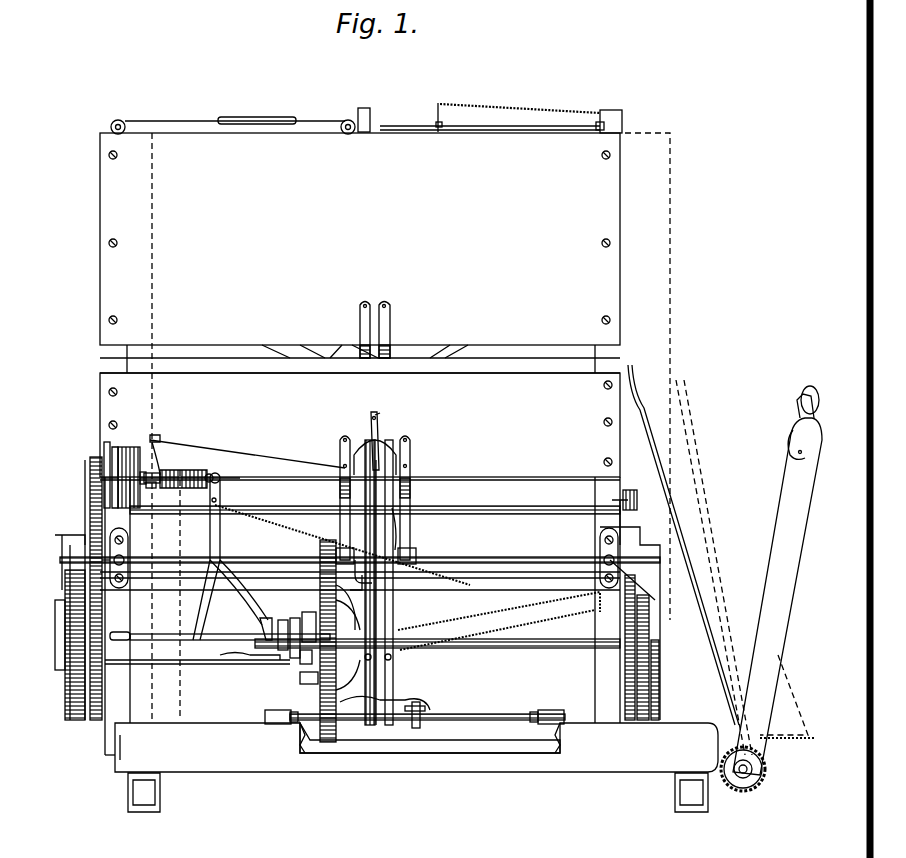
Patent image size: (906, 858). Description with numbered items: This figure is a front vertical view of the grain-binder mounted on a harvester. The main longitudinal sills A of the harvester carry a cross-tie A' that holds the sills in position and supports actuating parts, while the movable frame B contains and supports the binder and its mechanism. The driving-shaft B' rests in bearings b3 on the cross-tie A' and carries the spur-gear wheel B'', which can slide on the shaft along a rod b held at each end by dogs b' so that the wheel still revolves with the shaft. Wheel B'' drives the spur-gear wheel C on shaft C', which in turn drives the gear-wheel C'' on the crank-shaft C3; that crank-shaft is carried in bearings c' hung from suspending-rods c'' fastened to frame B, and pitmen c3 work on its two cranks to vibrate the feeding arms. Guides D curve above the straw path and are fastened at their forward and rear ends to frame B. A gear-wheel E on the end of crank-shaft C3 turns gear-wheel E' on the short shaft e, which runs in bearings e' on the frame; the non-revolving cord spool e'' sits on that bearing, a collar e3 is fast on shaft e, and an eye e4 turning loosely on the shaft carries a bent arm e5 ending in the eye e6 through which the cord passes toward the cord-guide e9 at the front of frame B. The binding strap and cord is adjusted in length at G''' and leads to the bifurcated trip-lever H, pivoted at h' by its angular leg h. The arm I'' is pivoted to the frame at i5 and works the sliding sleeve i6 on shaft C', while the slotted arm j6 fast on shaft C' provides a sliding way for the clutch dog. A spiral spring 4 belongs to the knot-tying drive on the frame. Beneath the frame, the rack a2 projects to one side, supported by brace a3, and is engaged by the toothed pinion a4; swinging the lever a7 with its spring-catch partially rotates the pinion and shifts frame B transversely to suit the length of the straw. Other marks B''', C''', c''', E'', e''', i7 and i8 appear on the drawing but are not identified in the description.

The main longitudinal sills A is at (418, 792).
The cross-tie A' is at (416, 747).
The movable frame B is at (360, 444).
The driving-shaft B' is at (427, 707).
The spur-gear wheel B'' is at (430, 738).
The right gear stack B''' is at (630, 605).
The spur-gear wheel C is at (340, 641).
The shaft C' is at (437, 652).
The gear-wheel C'' is at (377, 580).
The upper shaft C''' is at (375, 528).
The crank-shaft C3 is at (360, 551).
The bearings c' is at (411, 531).
The suspending-rods c'' is at (354, 571).
The link c''' is at (351, 584).
The pitmen c3 is at (347, 607).
The guides D is at (374, 330).
The gear-wheel E is at (101, 588).
The gear-wheel E' is at (105, 517).
The left gear stack E'' is at (70, 627).
The short shaft e is at (190, 476).
The bearings e' is at (105, 469).
The cord spool e'' is at (97, 484).
The pin e''' is at (112, 533).
The collar e3 is at (149, 469).
The eye e4 is at (158, 491).
The bent arm e5 is at (163, 458).
The eye e6 is at (157, 432).
The cord-guide e9 is at (382, 436).
The cord-adjusting device G''' is at (240, 117).
The spiral spring 4 is at (501, 110).
The bifurcated pivoted lever H is at (205, 516).
The angular leg h is at (202, 600).
The pivot h' is at (241, 600).
The arm I'' is at (197, 666).
The pivot i5 is at (220, 644).
The sliding sleeve i6 is at (299, 632).
The block i7 is at (285, 628).
The block i8 is at (287, 663).
The slotted arm j6 is at (308, 641).
The rack a2 is at (720, 444).
The supporting-brace a3 is at (683, 545).
The toothed pinion a4 is at (754, 769).
The lever a7 is at (777, 580).
The rod b is at (410, 708).
The dogs b' is at (425, 700).
The bearings b3 is at (415, 709).